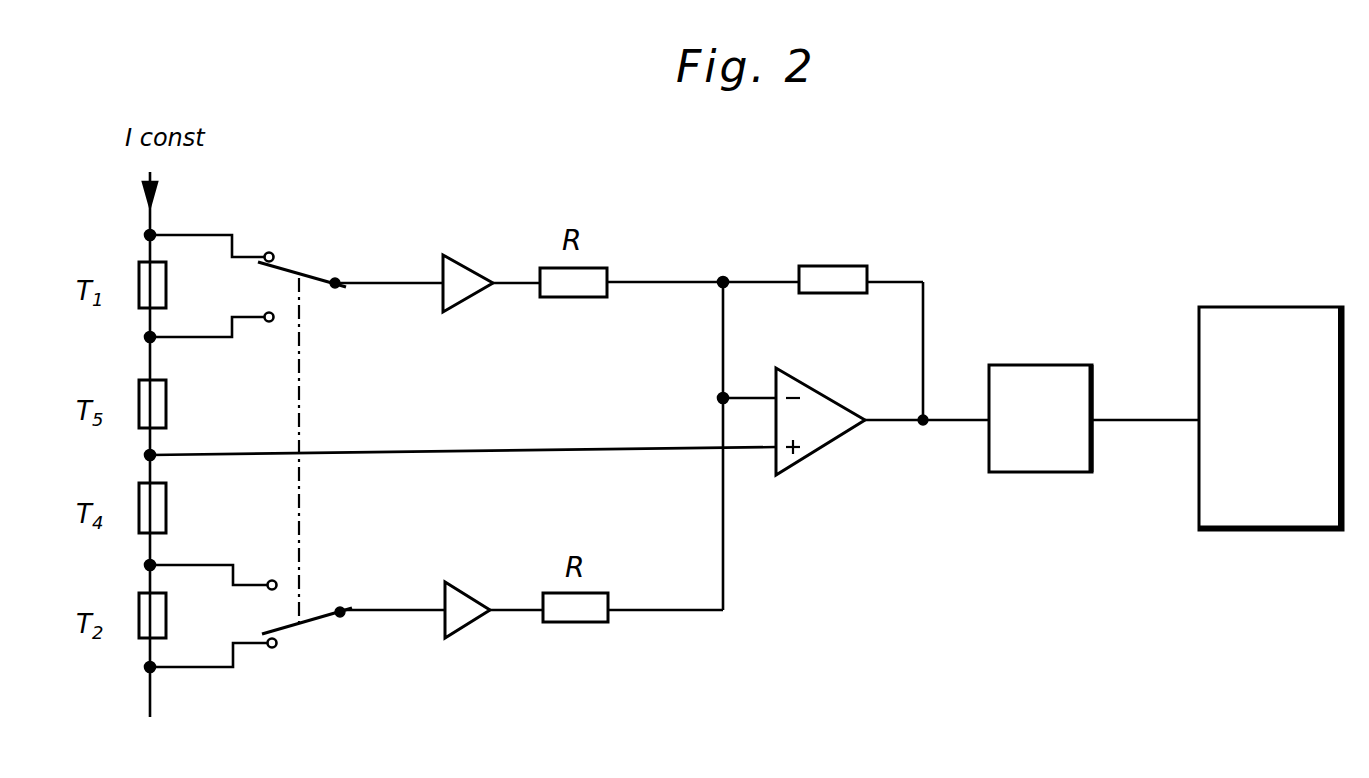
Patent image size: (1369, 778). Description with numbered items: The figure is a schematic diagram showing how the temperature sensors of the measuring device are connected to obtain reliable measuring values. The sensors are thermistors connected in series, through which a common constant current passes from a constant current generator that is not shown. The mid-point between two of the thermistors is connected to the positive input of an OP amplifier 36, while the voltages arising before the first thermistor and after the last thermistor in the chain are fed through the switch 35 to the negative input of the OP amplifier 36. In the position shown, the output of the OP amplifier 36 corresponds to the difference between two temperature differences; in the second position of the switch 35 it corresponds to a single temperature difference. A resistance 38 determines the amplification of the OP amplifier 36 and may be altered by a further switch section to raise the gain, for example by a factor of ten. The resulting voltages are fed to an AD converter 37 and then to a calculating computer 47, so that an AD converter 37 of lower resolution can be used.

The switch 35 is at (299, 393).
The OP amplifier 36 is at (808, 440).
The AD converter 37 is at (1033, 462).
The resistance 38 is at (850, 278).
The calculating computer 47 is at (1262, 520).